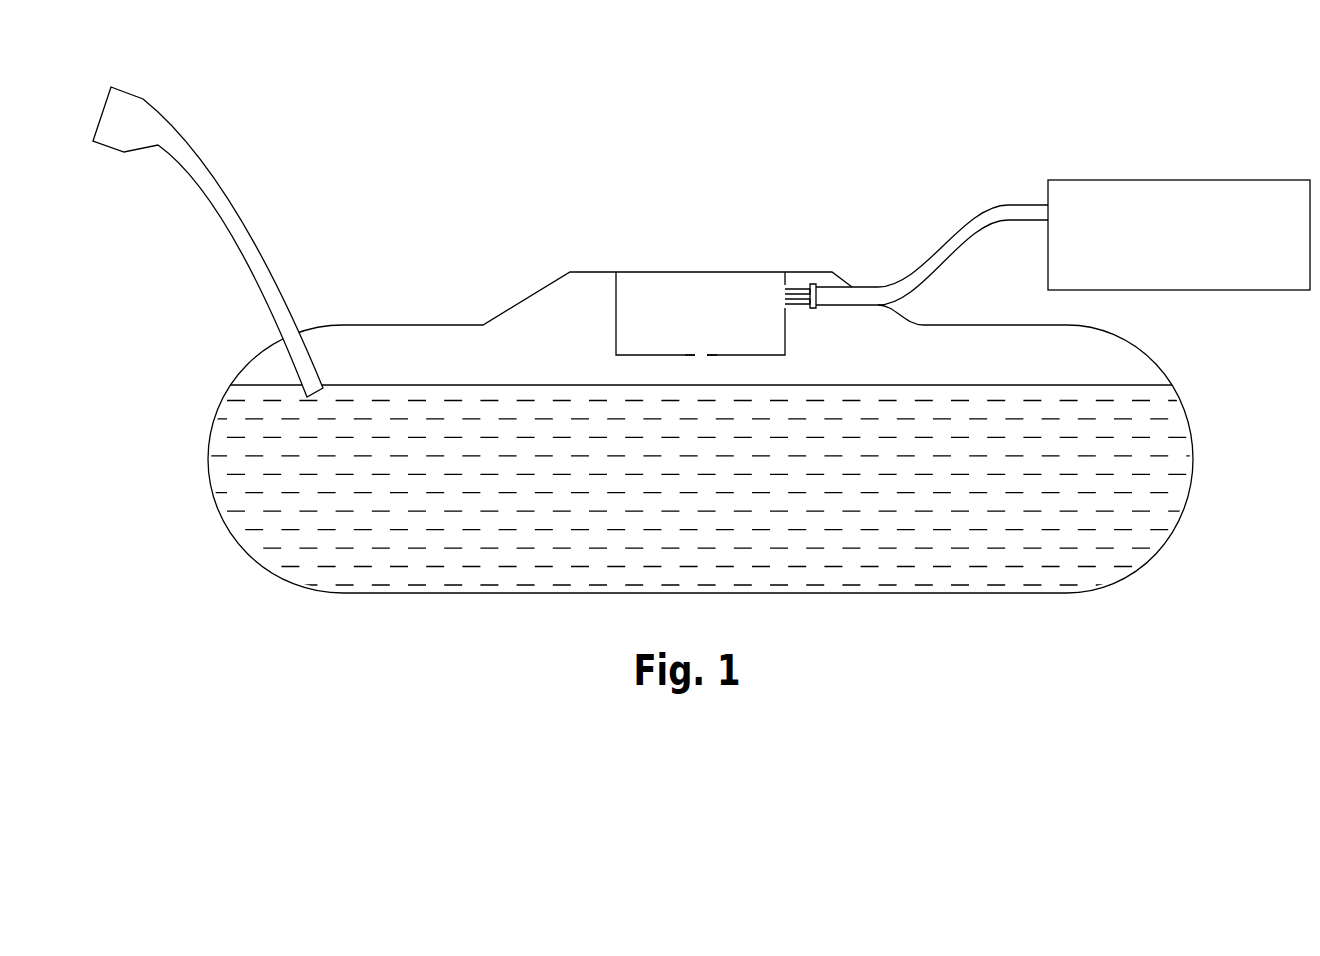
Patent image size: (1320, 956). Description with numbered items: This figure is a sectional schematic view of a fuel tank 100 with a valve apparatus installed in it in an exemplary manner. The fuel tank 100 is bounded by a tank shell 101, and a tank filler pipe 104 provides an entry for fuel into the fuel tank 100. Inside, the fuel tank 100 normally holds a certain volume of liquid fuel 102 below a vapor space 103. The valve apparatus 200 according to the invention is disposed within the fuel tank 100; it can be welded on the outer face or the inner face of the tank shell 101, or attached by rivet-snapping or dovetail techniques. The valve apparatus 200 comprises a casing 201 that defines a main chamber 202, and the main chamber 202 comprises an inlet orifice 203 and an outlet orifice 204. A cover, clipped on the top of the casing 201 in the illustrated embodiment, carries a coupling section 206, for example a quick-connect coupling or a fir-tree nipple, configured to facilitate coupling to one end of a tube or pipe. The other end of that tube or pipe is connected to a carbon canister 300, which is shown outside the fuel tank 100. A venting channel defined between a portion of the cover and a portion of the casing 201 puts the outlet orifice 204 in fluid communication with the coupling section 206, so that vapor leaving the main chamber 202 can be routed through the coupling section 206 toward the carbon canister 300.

The fuel tank 100 is at (475, 153).
The tank shell 101 is at (447, 328).
The liquid fuel 102 is at (283, 530).
The vapor space 103 is at (1097, 363).
The tank filler pipe 104 is at (202, 158).
The valve apparatus 200 is at (688, 243).
The casing 201 is at (613, 317).
The main chamber 202 is at (670, 298).
The inlet orifice 203 is at (702, 343).
The outlet orifice 204 is at (773, 295).
The coupling section 206 is at (805, 307).
The carbon canister 300 is at (1179, 235).